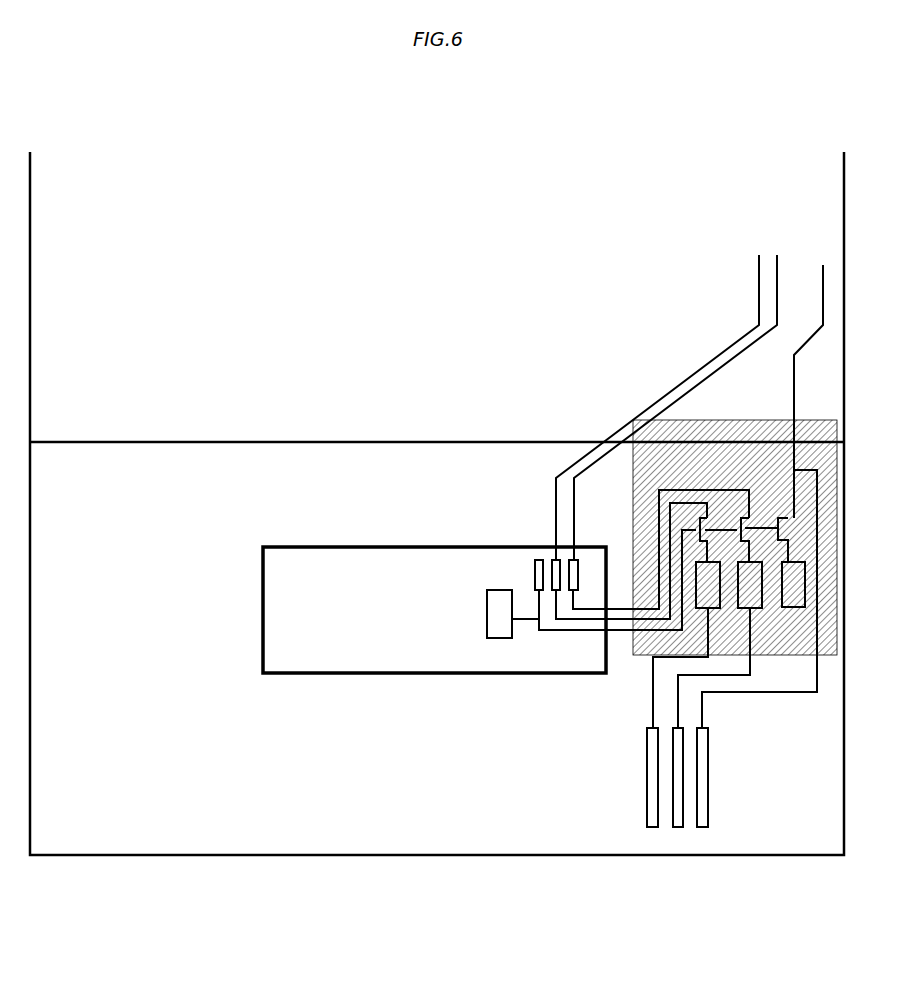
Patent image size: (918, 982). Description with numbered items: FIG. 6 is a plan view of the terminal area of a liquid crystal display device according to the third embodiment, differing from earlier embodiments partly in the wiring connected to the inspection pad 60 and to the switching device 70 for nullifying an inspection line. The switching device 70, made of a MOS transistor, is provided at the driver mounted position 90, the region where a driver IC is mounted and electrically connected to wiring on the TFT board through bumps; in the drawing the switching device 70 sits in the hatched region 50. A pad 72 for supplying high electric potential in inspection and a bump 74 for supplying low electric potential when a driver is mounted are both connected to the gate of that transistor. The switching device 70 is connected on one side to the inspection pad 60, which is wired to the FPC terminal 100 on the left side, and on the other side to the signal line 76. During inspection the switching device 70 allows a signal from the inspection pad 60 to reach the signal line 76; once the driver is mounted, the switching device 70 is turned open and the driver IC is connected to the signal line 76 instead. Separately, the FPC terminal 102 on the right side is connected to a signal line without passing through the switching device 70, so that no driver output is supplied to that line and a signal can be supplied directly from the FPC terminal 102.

The pixel circuit region 50 is at (763, 537).
The inspection pad 60 is at (771, 623).
The switching device for nullifying an inspection line 70 is at (798, 496).
The pad for supplying high electric potential in inspection 72 is at (474, 757).
The bump for supplying low electric potential 74 is at (619, 499).
The signal line 76 is at (666, 405).
The driver mounted position 90 is at (434, 528).
The FPC terminal 100 is at (650, 832).
The FPC terminal 102 is at (739, 840).